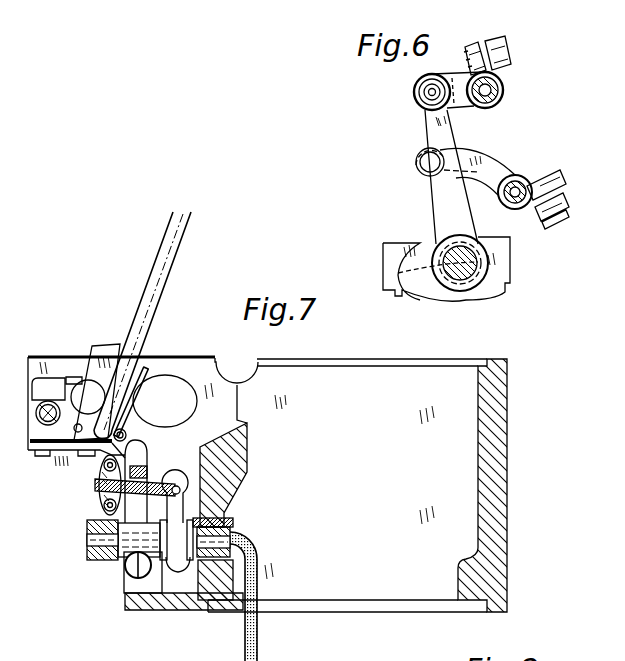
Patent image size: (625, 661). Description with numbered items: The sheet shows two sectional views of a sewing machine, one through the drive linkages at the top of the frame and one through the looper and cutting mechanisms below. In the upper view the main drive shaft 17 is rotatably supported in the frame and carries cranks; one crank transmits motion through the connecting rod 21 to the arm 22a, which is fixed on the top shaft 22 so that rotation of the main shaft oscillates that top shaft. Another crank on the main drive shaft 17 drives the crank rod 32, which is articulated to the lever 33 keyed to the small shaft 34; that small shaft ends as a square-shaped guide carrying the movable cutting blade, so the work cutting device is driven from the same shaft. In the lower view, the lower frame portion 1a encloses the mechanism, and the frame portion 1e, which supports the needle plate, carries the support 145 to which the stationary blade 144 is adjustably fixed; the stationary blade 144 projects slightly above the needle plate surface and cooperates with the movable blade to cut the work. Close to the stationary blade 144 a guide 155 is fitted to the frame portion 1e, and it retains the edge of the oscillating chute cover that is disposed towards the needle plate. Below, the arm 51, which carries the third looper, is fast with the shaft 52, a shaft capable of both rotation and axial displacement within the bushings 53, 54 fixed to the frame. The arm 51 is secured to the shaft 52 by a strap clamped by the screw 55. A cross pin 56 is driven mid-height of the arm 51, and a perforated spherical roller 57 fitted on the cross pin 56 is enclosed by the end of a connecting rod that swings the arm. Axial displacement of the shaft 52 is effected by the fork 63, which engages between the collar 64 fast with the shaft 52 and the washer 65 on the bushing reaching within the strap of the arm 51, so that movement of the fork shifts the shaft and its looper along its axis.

In FIG. 6, the connecting rod 21 is at (428, 131).
In FIG. 6, the top shaft 22 is at (505, 96).
In FIG. 6, the arm 22a is at (462, 97).
In FIG. 6, the connecting rod (crank rod) 32 is at (420, 225).
In FIG. 6, the lever 33 is at (488, 180).
In FIG. 6, the small shaft 34 is at (524, 180).
In FIG. 6, the main drive shaft 17 is at (470, 278).
In FIG. 7, the support 145 is at (32, 356).
In FIG. 7, the stationary blade 144 is at (97, 347).
In FIG. 7, the guide 155 is at (152, 364).
In FIG. 7, the arm 51 is at (145, 453).
In FIG. 7, the frame portion 1e is at (56, 456).
In FIG. 7, the cross pin 56 is at (95, 486).
In FIG. 7, the perforated spherical roller 57 is at (100, 503).
In FIG. 7, the shaft 52 is at (86, 540).
In FIG. 7, the bushing 54 is at (100, 562).
In FIG. 7, the screw 55 is at (128, 580).
In FIG. 7, the washer 65 is at (157, 570).
In FIG. 7, the fork 63 is at (190, 560).
In FIG. 7, the bushing 53 is at (226, 568).
In FIG. 7, the collar 64 is at (231, 521).
In FIG. 7, the lower frame portion 1a is at (500, 488).